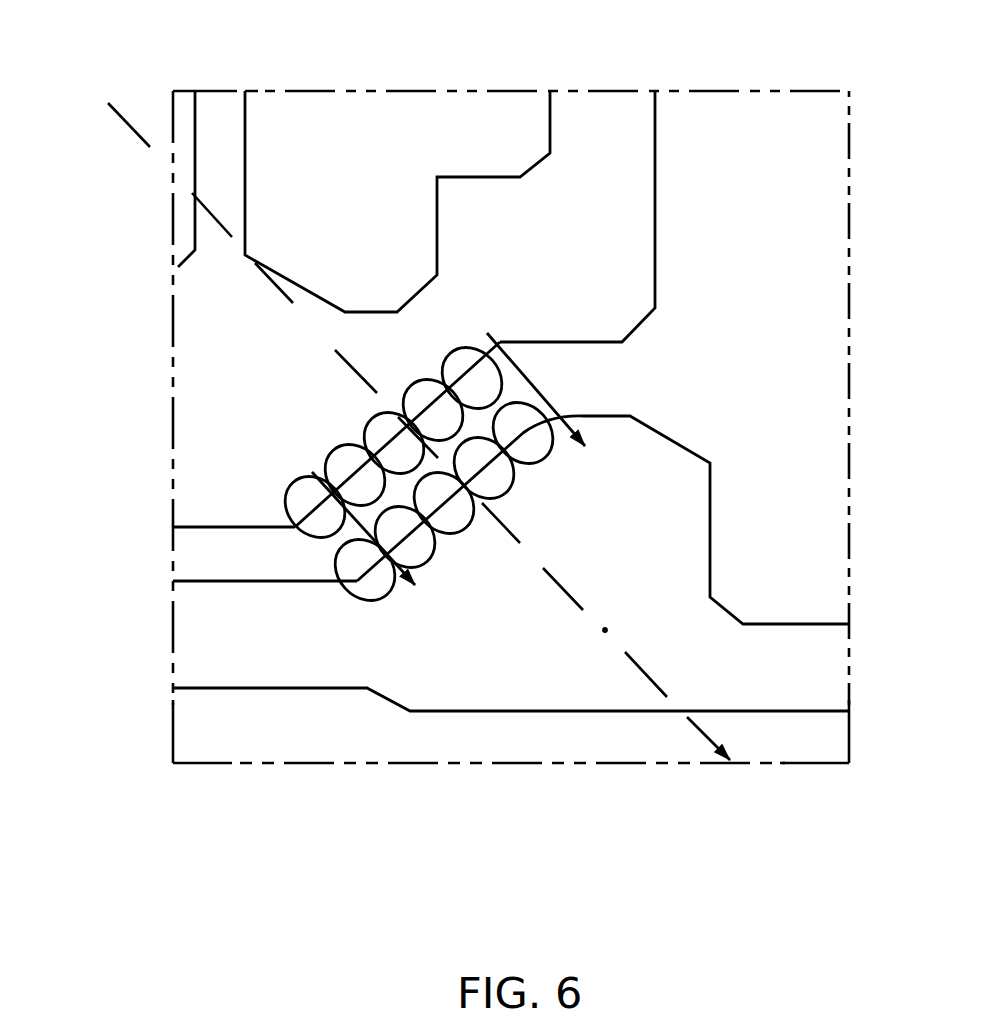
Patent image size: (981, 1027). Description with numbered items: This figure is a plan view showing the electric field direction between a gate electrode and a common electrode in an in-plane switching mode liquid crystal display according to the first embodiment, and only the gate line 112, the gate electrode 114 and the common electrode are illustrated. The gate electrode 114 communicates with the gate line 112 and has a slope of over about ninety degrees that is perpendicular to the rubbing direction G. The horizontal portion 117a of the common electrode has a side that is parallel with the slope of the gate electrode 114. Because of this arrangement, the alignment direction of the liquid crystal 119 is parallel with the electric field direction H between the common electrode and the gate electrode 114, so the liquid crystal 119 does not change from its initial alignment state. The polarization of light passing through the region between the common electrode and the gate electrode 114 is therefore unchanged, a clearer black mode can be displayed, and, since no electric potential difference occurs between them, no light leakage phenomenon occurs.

The rubbing direction G is at (212, 215).
The electric field direction H is at (552, 385).
The gate line 112 is at (585, 712).
The gate electrode 114 is at (703, 455).
The horizontal portion of the common electrode 117a is at (193, 475).
The liquid crystal 119 is at (383, 597).